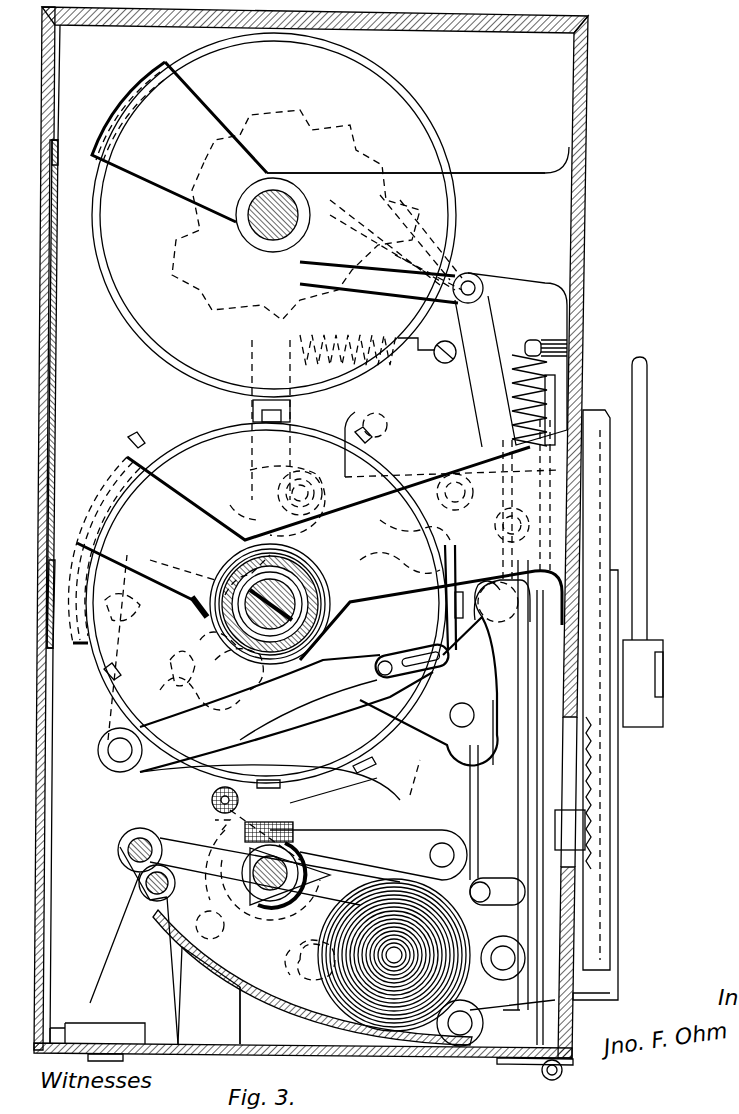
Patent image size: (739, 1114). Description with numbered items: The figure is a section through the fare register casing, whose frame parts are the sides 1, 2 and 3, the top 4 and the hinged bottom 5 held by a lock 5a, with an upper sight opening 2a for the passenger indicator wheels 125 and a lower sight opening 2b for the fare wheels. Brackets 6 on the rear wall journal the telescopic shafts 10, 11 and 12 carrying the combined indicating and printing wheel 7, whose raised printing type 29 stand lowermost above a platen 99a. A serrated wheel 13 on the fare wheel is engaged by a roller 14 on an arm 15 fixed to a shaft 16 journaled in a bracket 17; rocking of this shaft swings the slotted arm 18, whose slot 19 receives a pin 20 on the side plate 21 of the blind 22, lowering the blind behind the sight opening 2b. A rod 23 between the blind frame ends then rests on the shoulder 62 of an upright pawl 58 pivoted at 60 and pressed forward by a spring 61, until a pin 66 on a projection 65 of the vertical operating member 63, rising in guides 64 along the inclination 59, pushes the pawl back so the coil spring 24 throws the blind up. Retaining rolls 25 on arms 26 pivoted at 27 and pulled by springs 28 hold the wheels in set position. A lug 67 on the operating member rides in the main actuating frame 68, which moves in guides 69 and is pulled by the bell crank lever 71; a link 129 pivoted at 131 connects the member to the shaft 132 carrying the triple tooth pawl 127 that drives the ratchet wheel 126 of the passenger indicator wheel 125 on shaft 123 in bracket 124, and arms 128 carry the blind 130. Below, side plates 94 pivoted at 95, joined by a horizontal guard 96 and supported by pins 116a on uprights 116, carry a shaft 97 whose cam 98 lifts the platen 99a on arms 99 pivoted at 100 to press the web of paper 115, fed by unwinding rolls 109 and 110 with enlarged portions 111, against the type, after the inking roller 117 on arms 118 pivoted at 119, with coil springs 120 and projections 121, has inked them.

The side 1 is at (586, 197).
The side 2 is at (40, 466).
The upper sight opening 2a is at (52, 205).
The sight opening 2b is at (50, 593).
The side 3 is at (266, 561).
The top 4 is at (540, 25).
The bottom 5 is at (158, 1044).
The lock 5a is at (80, 1030).
The brackets 6 is at (431, 597).
The combination indicating and printing wheel 7 is at (445, 439).
The telescopic shaft 10 is at (245, 660).
The telescopic shaft 11 is at (172, 626).
The telescopic shaft 12 is at (288, 568).
The serrated wheel 13 is at (228, 520).
The roller 14 is at (180, 669).
The arm 15 is at (108, 712).
The shaft 16 is at (108, 758).
The bracket 17 is at (200, 697).
The slotted arm 18 is at (286, 713).
The slot 19 is at (410, 730).
The pin 20 is at (440, 650).
The side plate 21 is at (445, 722).
The blind 22 is at (110, 500).
The rod 23 is at (448, 805).
The coil spring 24 is at (300, 655).
The retaining roll 25 is at (301, 480).
The arm 26 is at (374, 426).
The pivot 27 is at (452, 490).
The spring 28 is at (512, 350).
The printing type 29 is at (272, 780).
The pawl 58 is at (497, 732).
The inclination 59 is at (478, 786).
The pivot 60 is at (508, 980).
The spring 61 is at (565, 795).
The shoulder 62 is at (482, 630).
The vertical operating member 63 is at (560, 900).
The guides 64 is at (570, 385).
The projection 65 is at (494, 892).
The pin 66 is at (483, 882).
The lug 67 is at (590, 830).
The main actuating frame 68 is at (615, 895).
The guides 69 is at (582, 952).
The bell crank lever 71 is at (648, 465).
The side plates 94 is at (263, 899).
The pivot 95 is at (452, 1046).
The horizontal guard 96 is at (290, 1020).
The shaft 97 is at (266, 902).
The cam 98 is at (288, 895).
The arm 99 is at (350, 850).
The platen 99a is at (333, 788).
The pivot 100 is at (420, 835).
The unwinding roll 109 is at (120, 862).
The unwinding roll 110 is at (140, 885).
The enlarged peripheral portion 111 is at (172, 893).
The web of paper 115 is at (390, 880).
The upright 116 is at (209, 995).
The pin 116a is at (200, 932).
The inking roller 117 is at (212, 808).
The arm 118 is at (190, 795).
The pivot 119 is at (248, 459).
The coil spring 120 is at (400, 366).
The projection 121 is at (269, 816).
The shaft 123 is at (262, 248).
The bracket 124 is at (429, 242).
The passenger indicator wheel 125 is at (432, 130).
The ratchet wheel 126 is at (170, 262).
The triple tooth pawl 127 is at (395, 160).
The arm 128 is at (430, 286).
The link 129 is at (475, 405).
The blind 130 is at (110, 115).
The pivot 131 is at (470, 582).
The shaft 132 is at (483, 280).